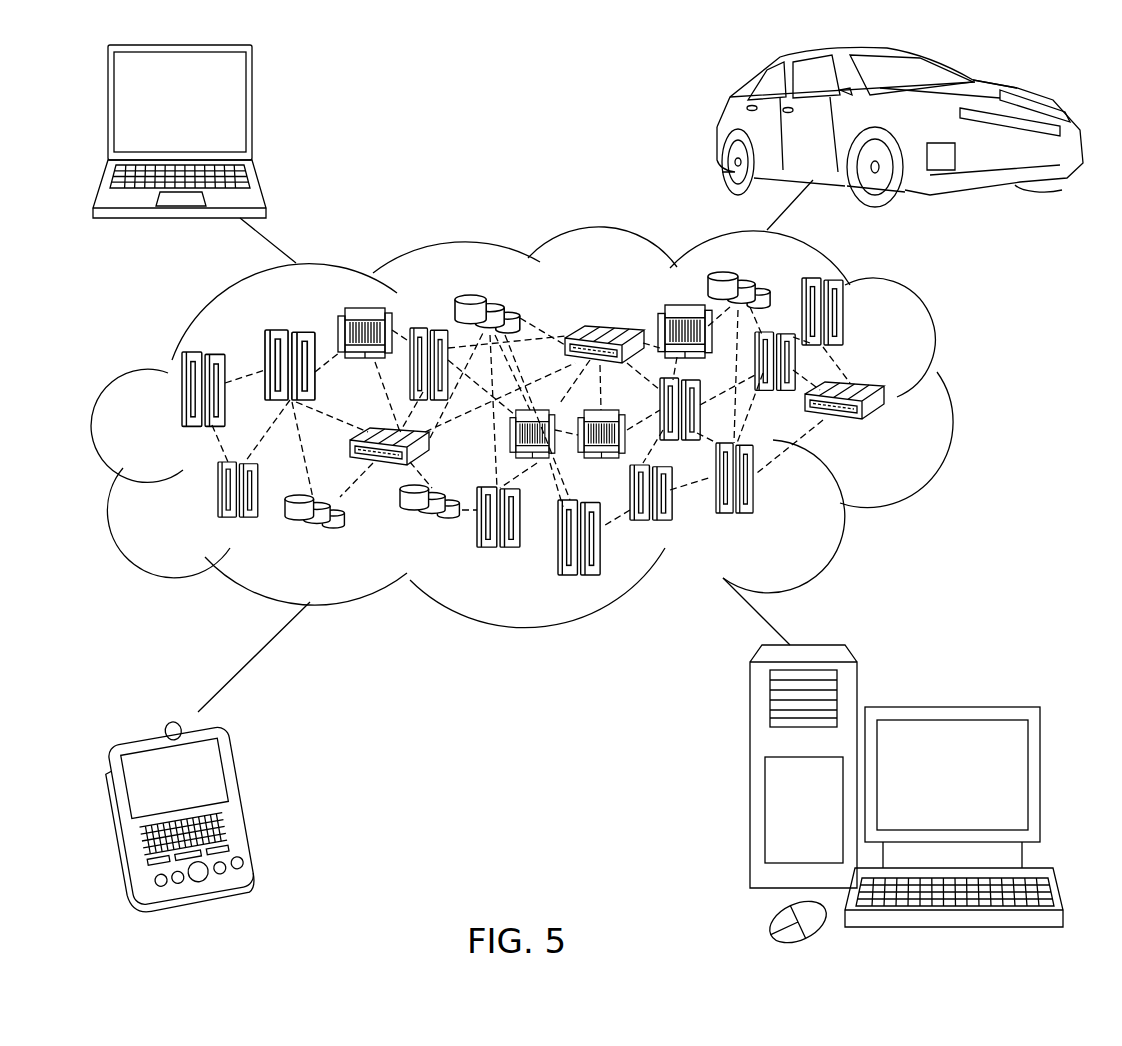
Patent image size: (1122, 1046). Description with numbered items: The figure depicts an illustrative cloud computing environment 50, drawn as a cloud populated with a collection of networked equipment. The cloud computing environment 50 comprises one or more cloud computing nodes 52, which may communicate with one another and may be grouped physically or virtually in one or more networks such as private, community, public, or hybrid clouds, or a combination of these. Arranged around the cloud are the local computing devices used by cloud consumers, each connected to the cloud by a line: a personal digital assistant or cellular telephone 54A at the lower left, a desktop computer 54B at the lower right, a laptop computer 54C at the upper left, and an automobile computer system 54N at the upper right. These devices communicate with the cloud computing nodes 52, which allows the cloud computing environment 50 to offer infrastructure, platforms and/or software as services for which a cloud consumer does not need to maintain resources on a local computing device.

The cloud computing environment 50 is at (950, 402).
The cloud computing nodes 52 is at (887, 436).
The personal digital assistant or cellular telephone 54A is at (243, 806).
The desktop computer 54B is at (950, 707).
The laptop computer 54C is at (254, 110).
The automobile computer system 54N is at (717, 128).